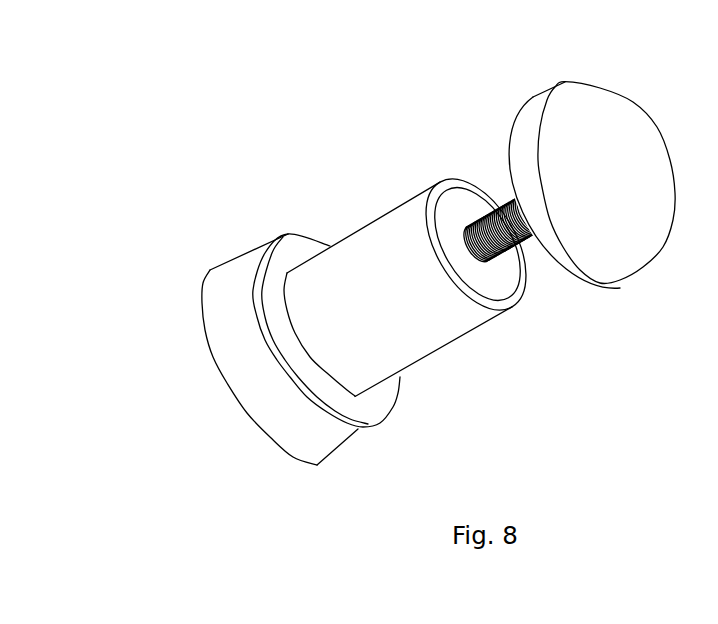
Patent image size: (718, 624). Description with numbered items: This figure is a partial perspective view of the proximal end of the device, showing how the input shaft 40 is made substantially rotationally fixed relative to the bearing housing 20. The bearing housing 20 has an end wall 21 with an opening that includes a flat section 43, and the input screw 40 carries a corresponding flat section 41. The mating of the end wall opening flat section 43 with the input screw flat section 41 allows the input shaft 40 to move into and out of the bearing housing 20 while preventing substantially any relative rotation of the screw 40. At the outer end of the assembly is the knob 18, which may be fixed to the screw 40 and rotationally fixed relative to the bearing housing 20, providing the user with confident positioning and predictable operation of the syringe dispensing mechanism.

The knob 18 is at (623, 133).
The bearing housing 20 is at (378, 258).
The end wall 21 is at (458, 203).
The input shaft 40 is at (500, 207).
The input screw flat section 41 is at (532, 243).
The end wall opening flat section 43 is at (485, 248).